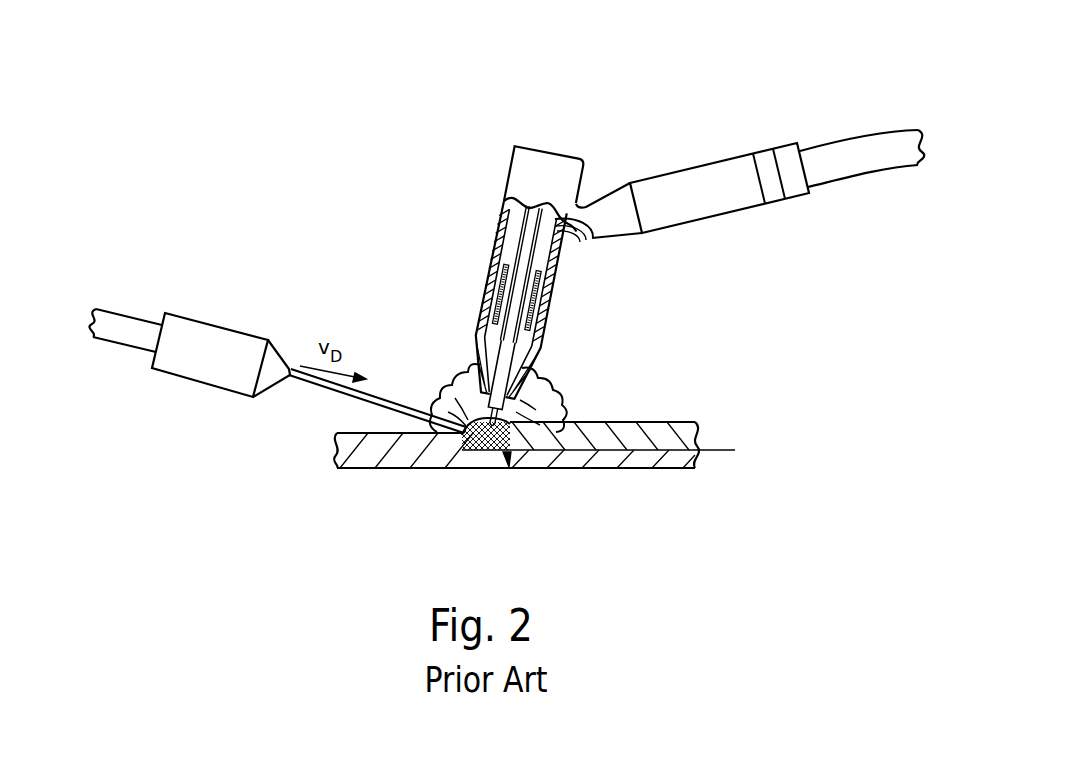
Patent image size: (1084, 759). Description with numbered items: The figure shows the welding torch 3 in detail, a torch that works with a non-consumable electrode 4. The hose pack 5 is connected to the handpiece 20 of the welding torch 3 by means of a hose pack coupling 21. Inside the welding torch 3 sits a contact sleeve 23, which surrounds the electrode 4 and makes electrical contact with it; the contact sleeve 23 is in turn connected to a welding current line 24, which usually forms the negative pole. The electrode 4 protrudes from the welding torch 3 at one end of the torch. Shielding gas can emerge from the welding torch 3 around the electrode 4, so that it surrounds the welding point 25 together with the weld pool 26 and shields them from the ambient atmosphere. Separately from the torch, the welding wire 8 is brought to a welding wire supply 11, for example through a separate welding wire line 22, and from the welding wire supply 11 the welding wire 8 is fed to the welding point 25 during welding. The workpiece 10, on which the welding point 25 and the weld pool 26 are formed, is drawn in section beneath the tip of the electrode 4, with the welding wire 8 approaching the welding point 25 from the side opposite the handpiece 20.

The welding torch 3 is at (533, 172).
The electrode 4 is at (522, 244).
The hose pack 5 is at (866, 155).
The welding wire 8 is at (310, 383).
The workpiece 10 is at (640, 455).
The welding wire supply 11 is at (223, 357).
The handpiece 20 is at (703, 192).
The hose pack coupling 21 is at (763, 177).
The welding wire line 22 is at (122, 328).
The contact sleeve 23 is at (537, 288).
The welding current line 24 is at (590, 233).
The welding point 25 is at (506, 455).
The weld pool 26 is at (473, 443).